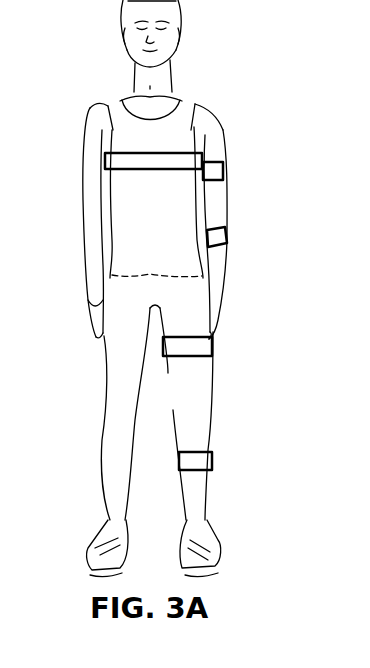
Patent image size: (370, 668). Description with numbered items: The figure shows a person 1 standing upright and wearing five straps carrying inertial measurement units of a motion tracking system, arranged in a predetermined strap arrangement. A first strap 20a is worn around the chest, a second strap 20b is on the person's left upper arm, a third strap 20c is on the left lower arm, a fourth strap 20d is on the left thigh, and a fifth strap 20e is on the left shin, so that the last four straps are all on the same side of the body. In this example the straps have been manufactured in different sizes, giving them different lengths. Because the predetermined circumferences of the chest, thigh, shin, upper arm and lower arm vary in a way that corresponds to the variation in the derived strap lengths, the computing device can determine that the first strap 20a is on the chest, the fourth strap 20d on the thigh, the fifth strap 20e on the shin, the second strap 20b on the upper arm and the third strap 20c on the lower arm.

The person 1 is at (97, 113).
The first strap 20a is at (190, 160).
The second strap 20b is at (210, 170).
The third strap 20c is at (217, 237).
The fourth strap 20d is at (190, 347).
The fifth strap 20e is at (198, 460).